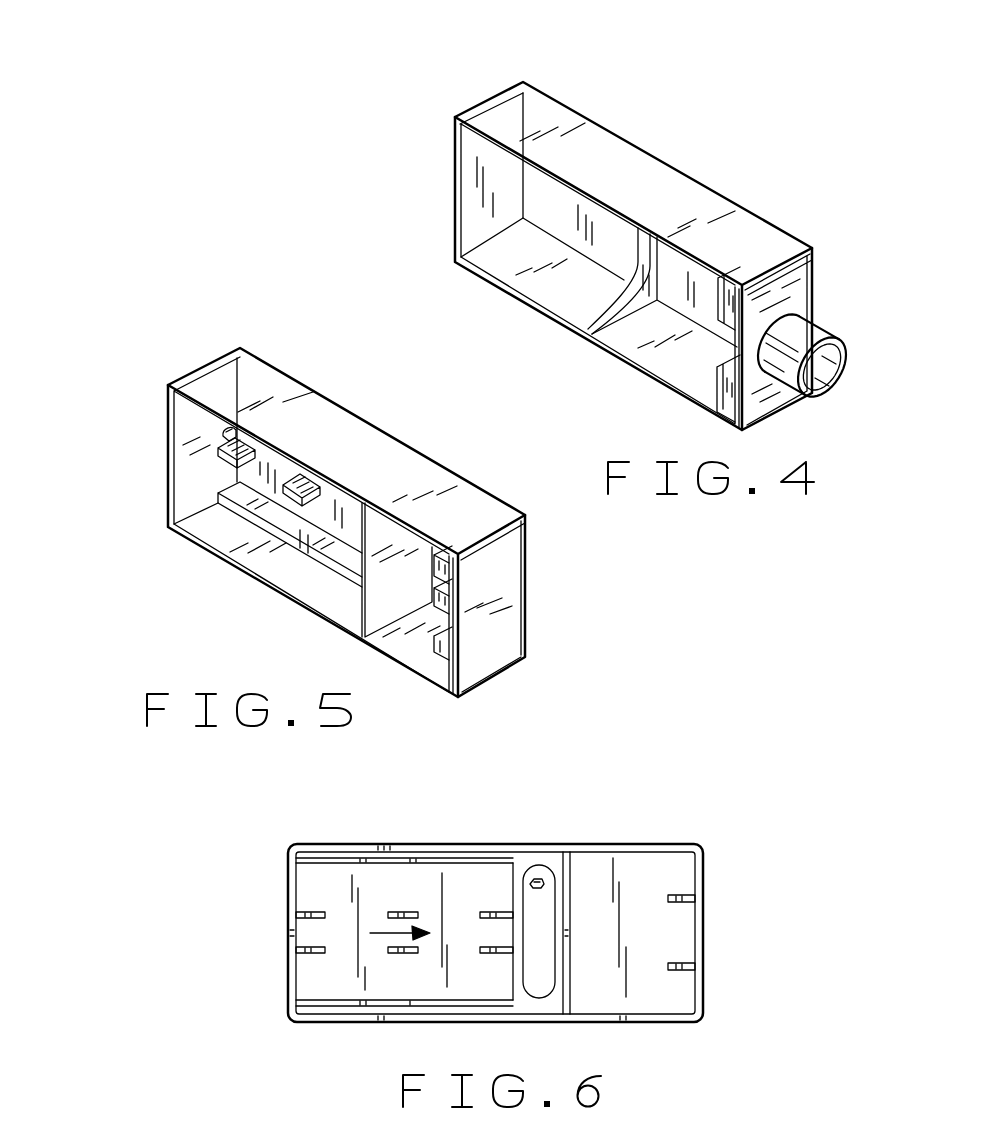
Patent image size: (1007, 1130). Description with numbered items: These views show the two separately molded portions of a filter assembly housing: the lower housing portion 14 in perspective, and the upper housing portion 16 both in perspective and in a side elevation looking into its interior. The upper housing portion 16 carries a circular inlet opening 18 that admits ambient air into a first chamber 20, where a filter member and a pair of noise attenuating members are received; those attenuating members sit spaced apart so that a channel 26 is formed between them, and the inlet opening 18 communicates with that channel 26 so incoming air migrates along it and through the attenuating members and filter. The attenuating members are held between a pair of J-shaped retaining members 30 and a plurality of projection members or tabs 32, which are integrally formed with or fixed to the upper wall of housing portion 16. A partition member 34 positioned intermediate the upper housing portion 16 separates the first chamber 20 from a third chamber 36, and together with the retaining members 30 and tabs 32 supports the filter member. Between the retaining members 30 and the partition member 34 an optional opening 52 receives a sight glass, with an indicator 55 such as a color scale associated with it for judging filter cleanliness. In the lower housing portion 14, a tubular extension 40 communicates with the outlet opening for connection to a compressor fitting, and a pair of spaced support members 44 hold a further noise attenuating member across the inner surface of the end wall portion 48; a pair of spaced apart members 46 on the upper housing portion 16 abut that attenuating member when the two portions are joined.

In FIG. 4, the lower housing portion 14 is at (691, 108).
In FIG. 5, the upper housing portion 16 is at (391, 397).
In FIG. 6, the upper housing portion 16 is at (196, 941).
In FIG. 5, the inlet opening 18 is at (225, 431).
In FIG. 6, the first chamber 20 is at (491, 899).
In FIG. 6, the channel 26 is at (376, 934).
In FIG. 5, the J-shaped retaining members 30 is at (240, 510).
In FIG. 6, the J-shaped retaining members 30 is at (424, 862).
In FIG. 5, the projection members or tabs 32 is at (244, 440).
In FIG. 6, the projection members or tabs 32 is at (313, 912).
In FIG. 5, the partition member 34 is at (365, 605).
In FIG. 6, the partition member 34 is at (572, 870).
In FIG. 6, the third chamber 36 is at (660, 945).
In FIG. 4, the tubular extension 40 is at (826, 386).
In FIG. 4, the support members 44 is at (718, 308).
In FIG. 5, the spaced apart members 46 is at (437, 600).
In FIG. 6, the spaced apart members 46 is at (683, 902).
In FIG. 4, the end wall portion 48 is at (800, 293).
In FIG. 6, the opening 52 is at (545, 1000).
In FIG. 6, the indicator 55 is at (538, 878).